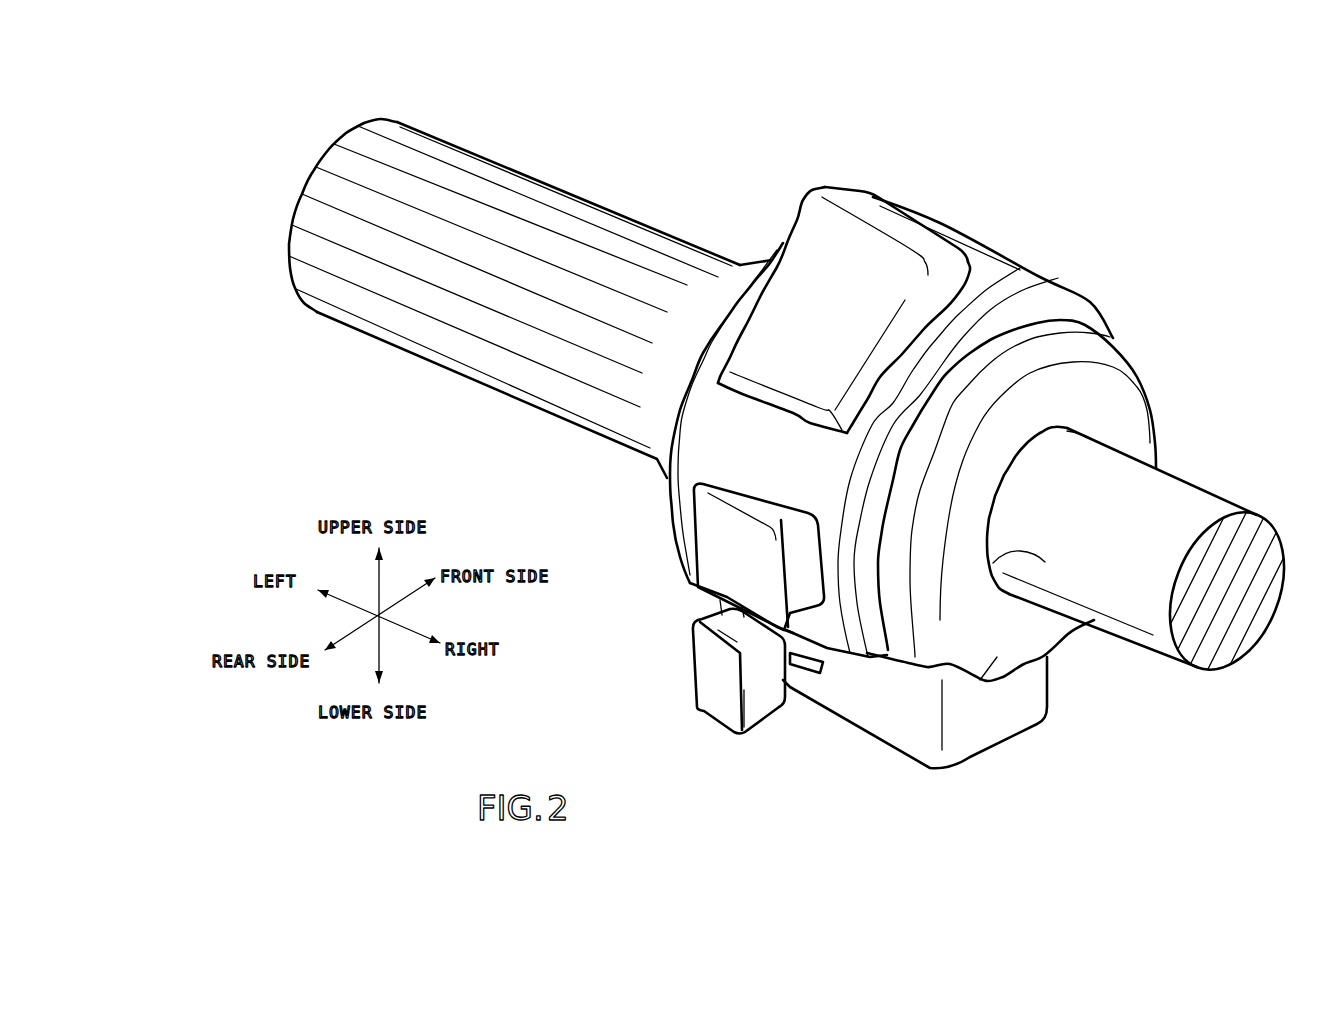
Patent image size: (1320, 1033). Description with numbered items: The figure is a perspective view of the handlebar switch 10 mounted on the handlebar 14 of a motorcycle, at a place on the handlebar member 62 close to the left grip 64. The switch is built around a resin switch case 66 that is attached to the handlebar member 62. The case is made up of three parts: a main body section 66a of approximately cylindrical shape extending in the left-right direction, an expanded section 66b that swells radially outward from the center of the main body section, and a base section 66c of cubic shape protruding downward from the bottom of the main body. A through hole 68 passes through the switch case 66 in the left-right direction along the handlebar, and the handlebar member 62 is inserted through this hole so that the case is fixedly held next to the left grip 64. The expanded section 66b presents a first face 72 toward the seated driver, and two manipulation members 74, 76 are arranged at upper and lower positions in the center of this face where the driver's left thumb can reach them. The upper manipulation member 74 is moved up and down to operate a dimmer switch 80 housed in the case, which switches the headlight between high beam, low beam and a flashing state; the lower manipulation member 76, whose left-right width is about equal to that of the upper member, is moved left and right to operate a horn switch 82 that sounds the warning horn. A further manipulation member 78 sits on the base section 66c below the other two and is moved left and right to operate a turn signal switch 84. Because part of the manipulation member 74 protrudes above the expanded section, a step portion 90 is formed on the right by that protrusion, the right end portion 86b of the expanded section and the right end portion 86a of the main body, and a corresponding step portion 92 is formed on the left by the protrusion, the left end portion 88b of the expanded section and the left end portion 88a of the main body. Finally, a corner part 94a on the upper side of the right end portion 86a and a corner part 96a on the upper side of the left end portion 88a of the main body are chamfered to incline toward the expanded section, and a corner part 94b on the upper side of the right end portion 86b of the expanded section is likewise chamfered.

The handlebar switch 10 is at (804, 442).
The handlebar 14 is at (1153, 543).
The handlebar member 62 is at (1173, 498).
The left grip 64 is at (450, 172).
The switch case 66 is at (1002, 487).
The main body section 66a is at (920, 620).
The expanded section 66b is at (970, 250).
The base section 66c is at (887, 723).
The through hole 68 is at (1045, 562).
The first face 72 is at (750, 470).
The manipulation member 74 is at (844, 283).
The manipulation member 76 is at (702, 557).
The manipulation member 78 is at (688, 671).
The dimmer switch 80 is at (822, 248).
The horn switch 82 is at (723, 547).
The turn signal switch 84 is at (710, 670).
The right end portion 86a is at (1120, 400).
The right end portion 86b is at (1060, 300).
The left end portion 88a is at (697, 330).
The left end portion 88b is at (660, 428).
The step portion 90 is at (1066, 459).
The step portion 92 is at (758, 241).
The corner part 94a is at (1090, 347).
The corner part 94b is at (1020, 282).
The corner part 96a is at (703, 333).